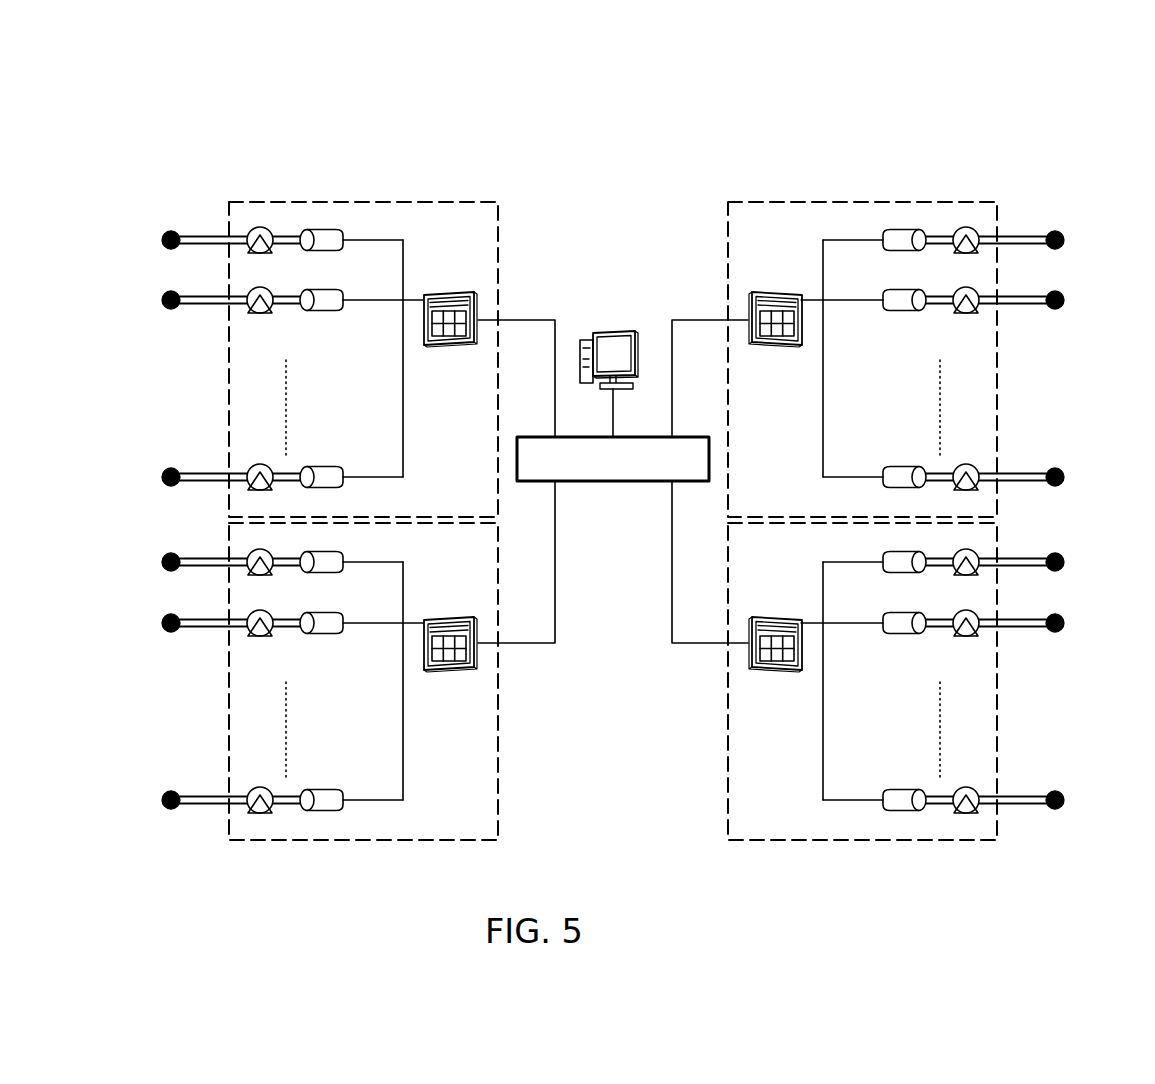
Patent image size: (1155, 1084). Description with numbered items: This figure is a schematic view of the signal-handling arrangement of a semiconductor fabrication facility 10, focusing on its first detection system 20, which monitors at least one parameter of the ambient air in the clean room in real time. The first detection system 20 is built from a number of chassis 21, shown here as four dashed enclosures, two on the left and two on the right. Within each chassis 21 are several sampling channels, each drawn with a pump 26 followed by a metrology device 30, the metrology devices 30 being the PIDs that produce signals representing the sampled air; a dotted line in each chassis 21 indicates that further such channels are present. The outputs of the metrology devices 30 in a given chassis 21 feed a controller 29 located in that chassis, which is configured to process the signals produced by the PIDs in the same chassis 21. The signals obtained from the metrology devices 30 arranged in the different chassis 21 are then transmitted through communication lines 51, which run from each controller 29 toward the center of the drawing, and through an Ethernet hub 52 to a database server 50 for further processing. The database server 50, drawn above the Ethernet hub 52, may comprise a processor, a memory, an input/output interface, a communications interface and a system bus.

The semiconductor fabrication facility 10 is at (158, 128).
The first detection system 20 is at (192, 355).
The chassis 21 is at (228, 218).
The pump 26 is at (260, 228).
The controller 29 is at (446, 290).
The metrology device (PID) 30 is at (320, 230).
The database server 50 is at (612, 330).
The communication line 51 is at (528, 318).
The Ethernet hub 52 is at (627, 472).